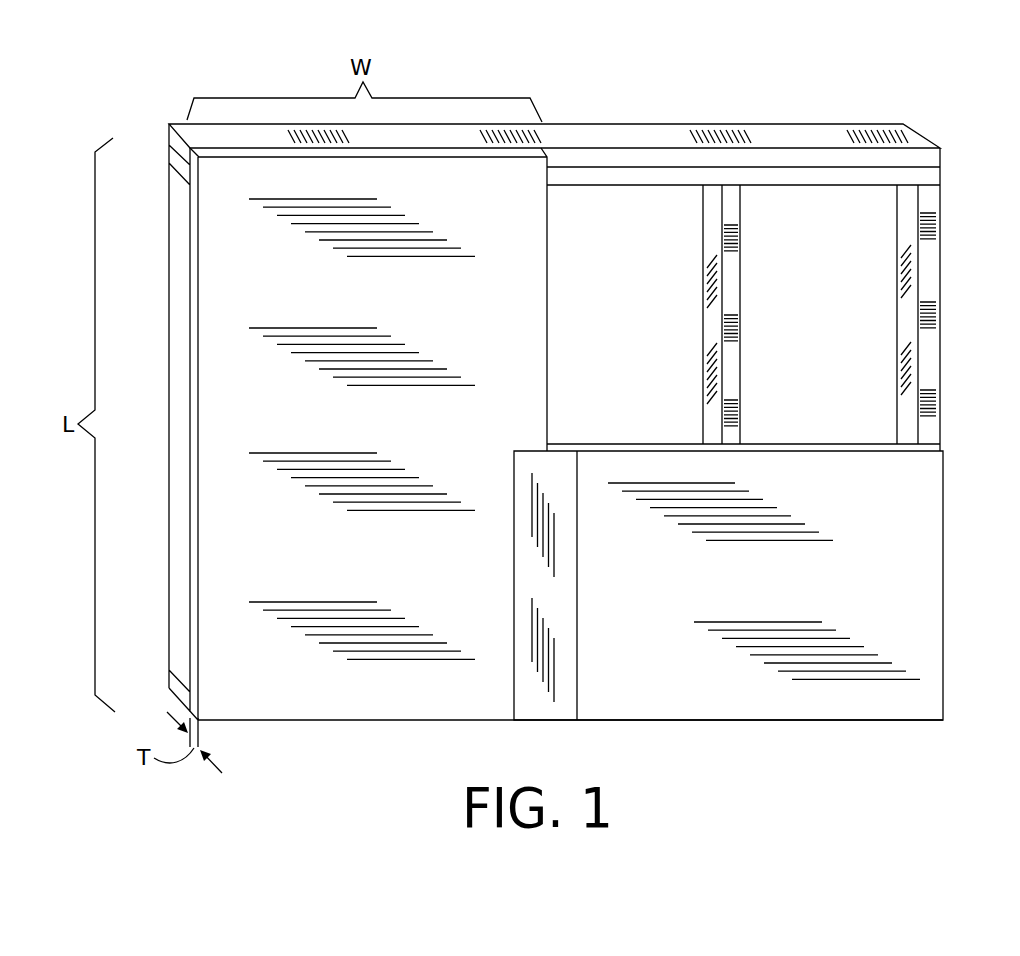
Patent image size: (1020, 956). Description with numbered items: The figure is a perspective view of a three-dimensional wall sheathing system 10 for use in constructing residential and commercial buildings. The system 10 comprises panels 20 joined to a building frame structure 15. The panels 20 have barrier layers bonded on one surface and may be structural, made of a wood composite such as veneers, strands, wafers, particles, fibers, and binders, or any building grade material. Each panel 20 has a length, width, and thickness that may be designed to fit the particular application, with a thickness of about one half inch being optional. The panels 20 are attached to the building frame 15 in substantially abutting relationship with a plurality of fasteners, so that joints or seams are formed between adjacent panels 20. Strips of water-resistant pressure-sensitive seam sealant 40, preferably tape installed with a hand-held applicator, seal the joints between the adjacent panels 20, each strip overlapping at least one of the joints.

The wall sheathing system 10 is at (786, 109).
The building frame structure 15 is at (927, 290).
The panel 20 is at (207, 452).
The seam sealant 40 is at (525, 682).